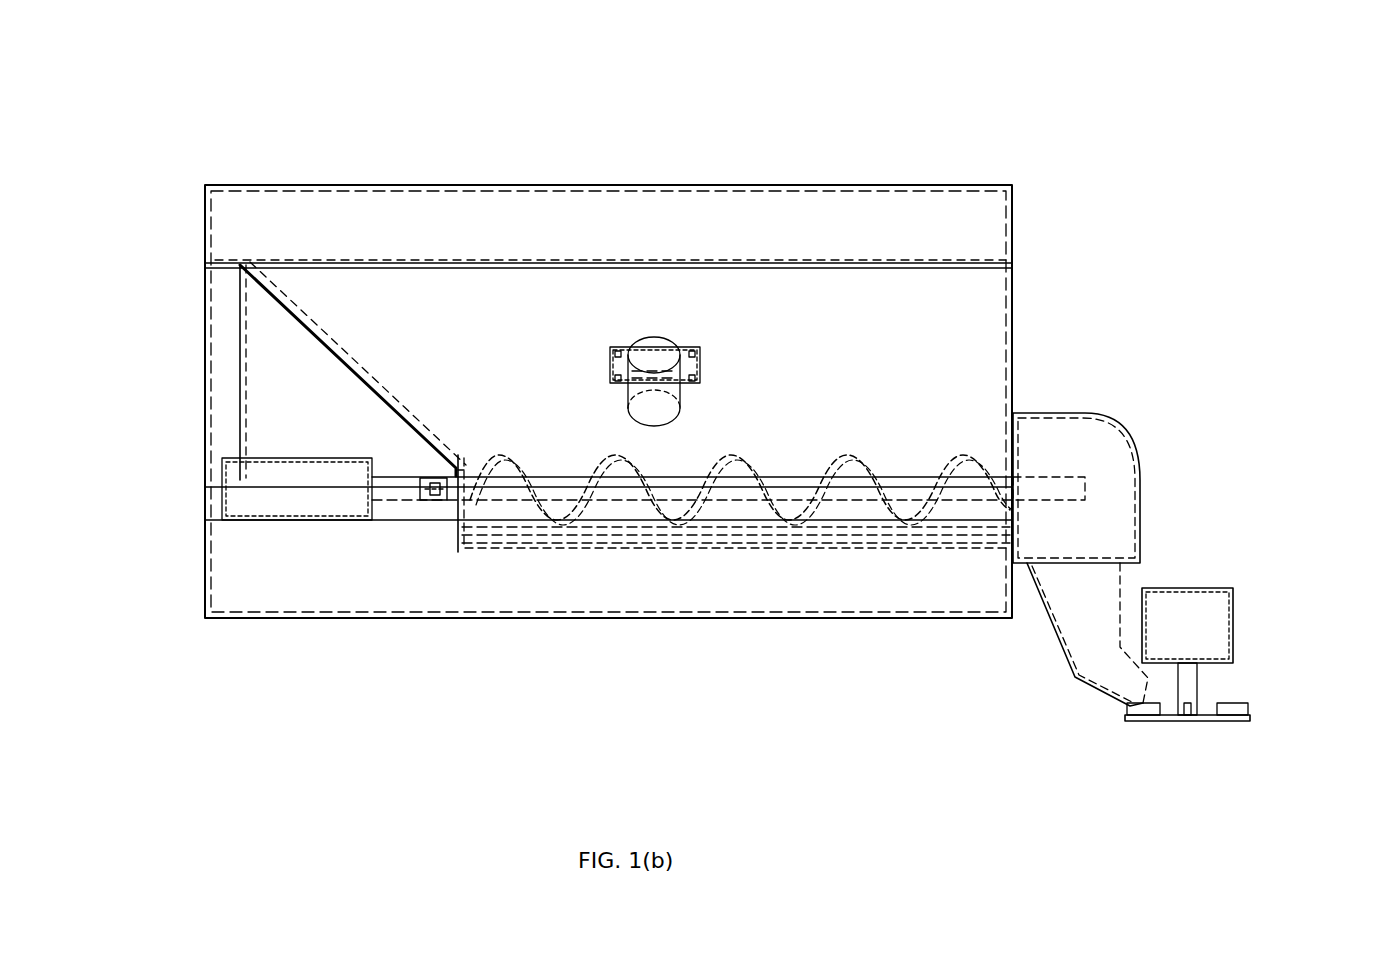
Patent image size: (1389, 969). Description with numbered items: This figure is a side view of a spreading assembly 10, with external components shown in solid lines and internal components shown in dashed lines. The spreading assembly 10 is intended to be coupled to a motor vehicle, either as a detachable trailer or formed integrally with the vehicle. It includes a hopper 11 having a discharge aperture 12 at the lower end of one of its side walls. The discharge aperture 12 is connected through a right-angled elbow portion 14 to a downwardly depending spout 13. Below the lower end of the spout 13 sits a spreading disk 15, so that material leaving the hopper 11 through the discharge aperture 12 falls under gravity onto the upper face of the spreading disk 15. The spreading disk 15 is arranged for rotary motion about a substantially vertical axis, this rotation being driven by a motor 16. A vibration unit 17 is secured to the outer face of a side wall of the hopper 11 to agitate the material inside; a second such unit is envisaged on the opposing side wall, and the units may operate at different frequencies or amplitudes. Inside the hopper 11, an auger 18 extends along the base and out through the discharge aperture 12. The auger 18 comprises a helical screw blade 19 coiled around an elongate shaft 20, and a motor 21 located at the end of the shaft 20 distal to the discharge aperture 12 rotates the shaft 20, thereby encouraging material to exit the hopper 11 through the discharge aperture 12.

The spreading assembly 10 is at (272, 150).
The hopper 11 is at (982, 313).
The discharge aperture 12 is at (1013, 487).
The spout 13 is at (1133, 677).
The right-angled elbow portion 14 is at (1125, 520).
The spreading disk 15 is at (1217, 719).
The motor 16 is at (1220, 625).
The vibration unit 17 is at (655, 345).
The auger 18 is at (817, 509).
The helical screw blade 19 is at (607, 508).
The elongate shaft 20 is at (475, 502).
The motor 21 is at (247, 508).